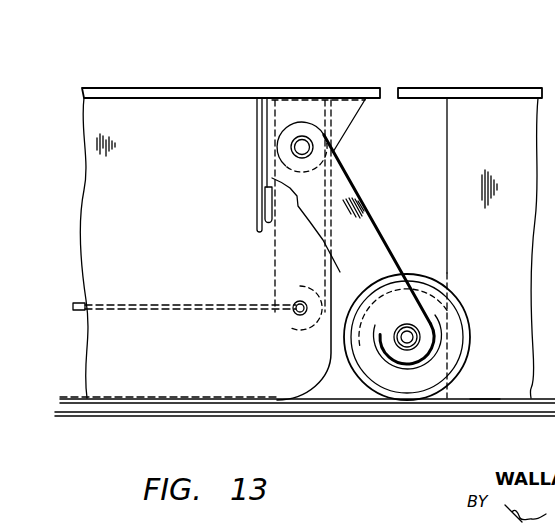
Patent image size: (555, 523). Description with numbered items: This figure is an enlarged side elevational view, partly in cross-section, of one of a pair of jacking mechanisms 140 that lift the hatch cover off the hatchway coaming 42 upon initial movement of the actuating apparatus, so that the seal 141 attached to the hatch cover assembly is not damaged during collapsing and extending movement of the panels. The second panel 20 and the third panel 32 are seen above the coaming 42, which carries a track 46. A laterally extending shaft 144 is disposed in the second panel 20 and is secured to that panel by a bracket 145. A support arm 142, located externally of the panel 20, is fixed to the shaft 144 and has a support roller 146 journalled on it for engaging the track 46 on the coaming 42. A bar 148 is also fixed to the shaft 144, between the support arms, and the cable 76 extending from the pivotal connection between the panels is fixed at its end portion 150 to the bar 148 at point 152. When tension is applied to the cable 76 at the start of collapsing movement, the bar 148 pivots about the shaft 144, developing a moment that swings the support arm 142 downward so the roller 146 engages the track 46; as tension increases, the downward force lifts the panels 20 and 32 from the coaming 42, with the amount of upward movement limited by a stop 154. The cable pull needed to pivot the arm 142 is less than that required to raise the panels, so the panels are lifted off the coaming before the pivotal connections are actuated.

The second panel 20 is at (172, 88).
The third panel 32 is at (498, 88).
The hatchway coaming 42 is at (172, 410).
The track 46 is at (272, 400).
The cable 76 is at (125, 303).
The jacking mechanism 140 is at (371, 197).
The seal 141 is at (487, 403).
The support arm 142 is at (385, 243).
The shaft 144 is at (302, 145).
The bracket 145 is at (345, 125).
The support roller 146 is at (463, 320).
The bar 148 is at (275, 260).
The end portion of cable 150 is at (288, 318).
The point 152 is at (297, 298).
The stop 154 is at (272, 200).